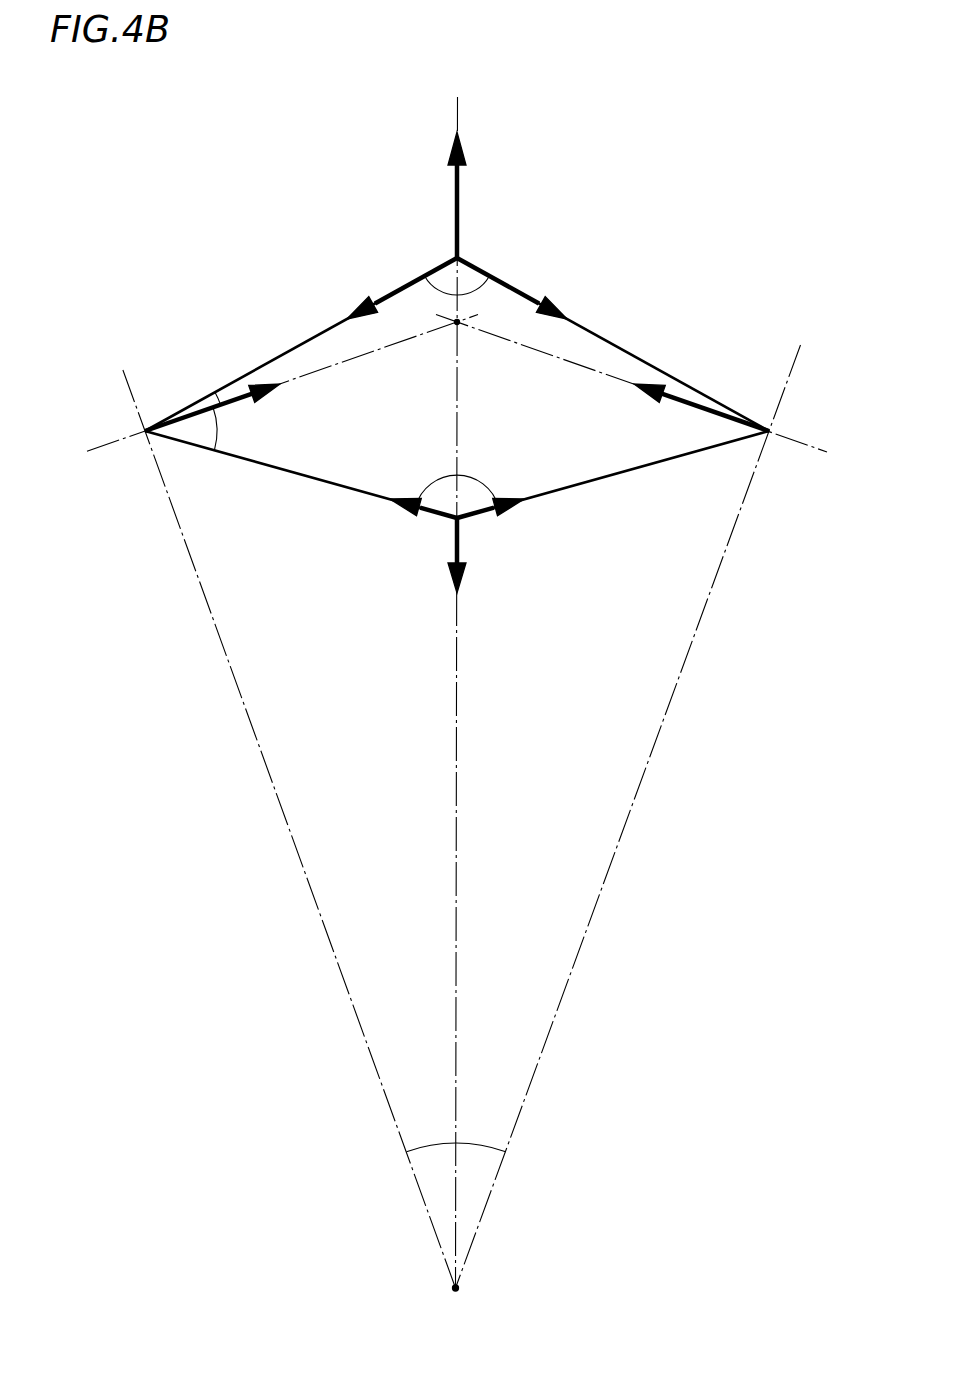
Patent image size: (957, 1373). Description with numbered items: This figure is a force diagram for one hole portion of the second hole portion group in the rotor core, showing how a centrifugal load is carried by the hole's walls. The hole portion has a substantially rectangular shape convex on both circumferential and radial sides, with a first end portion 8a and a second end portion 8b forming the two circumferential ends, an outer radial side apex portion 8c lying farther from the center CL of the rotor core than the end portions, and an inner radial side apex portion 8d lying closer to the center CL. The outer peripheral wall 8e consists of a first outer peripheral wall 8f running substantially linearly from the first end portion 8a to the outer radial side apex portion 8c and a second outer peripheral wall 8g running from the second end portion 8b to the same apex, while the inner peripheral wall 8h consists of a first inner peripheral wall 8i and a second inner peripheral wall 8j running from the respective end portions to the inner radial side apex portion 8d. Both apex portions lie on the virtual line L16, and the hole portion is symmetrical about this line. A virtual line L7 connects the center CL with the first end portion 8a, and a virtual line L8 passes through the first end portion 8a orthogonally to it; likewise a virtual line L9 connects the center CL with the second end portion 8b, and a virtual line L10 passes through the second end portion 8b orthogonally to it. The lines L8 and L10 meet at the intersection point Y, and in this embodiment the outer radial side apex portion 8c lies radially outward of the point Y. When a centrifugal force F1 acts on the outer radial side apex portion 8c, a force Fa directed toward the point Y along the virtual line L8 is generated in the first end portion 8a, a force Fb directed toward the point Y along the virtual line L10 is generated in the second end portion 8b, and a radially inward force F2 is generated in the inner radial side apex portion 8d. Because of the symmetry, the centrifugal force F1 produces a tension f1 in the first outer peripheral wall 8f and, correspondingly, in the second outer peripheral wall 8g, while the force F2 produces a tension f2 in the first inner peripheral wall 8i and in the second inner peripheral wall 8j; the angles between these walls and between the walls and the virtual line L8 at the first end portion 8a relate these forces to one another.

The first end portion 8a is at (150, 438).
The second end portion 8b is at (769, 428).
The outer radial side apex portion 8c is at (479, 266).
The inner radial side apex portion 8d is at (448, 522).
The outer peripheral wall 8e is at (457, 329).
The first outer peripheral wall 8f is at (323, 332).
The second outer peripheral wall 8g is at (626, 350).
The inner peripheral wall 8h is at (457, 501).
The first inner peripheral wall 8i is at (325, 478).
The second inner peripheral wall 8j is at (625, 465).
The virtual line L7 is at (282, 815).
The virtual line L8 is at (263, 393).
The virtual line L9 is at (636, 804).
The virtual line L10 is at (655, 394).
The virtual line L16 is at (457, 677).
The center of the rotor core CL is at (472, 1292).
The intersection point Y is at (456, 326).
The centrifugal force F1 is at (473, 195).
The force F2 is at (462, 550).
The tension f1 is at (457, 285).
The tension f2 is at (457, 524).
The force Fa is at (270, 405).
The force Fb is at (652, 411).